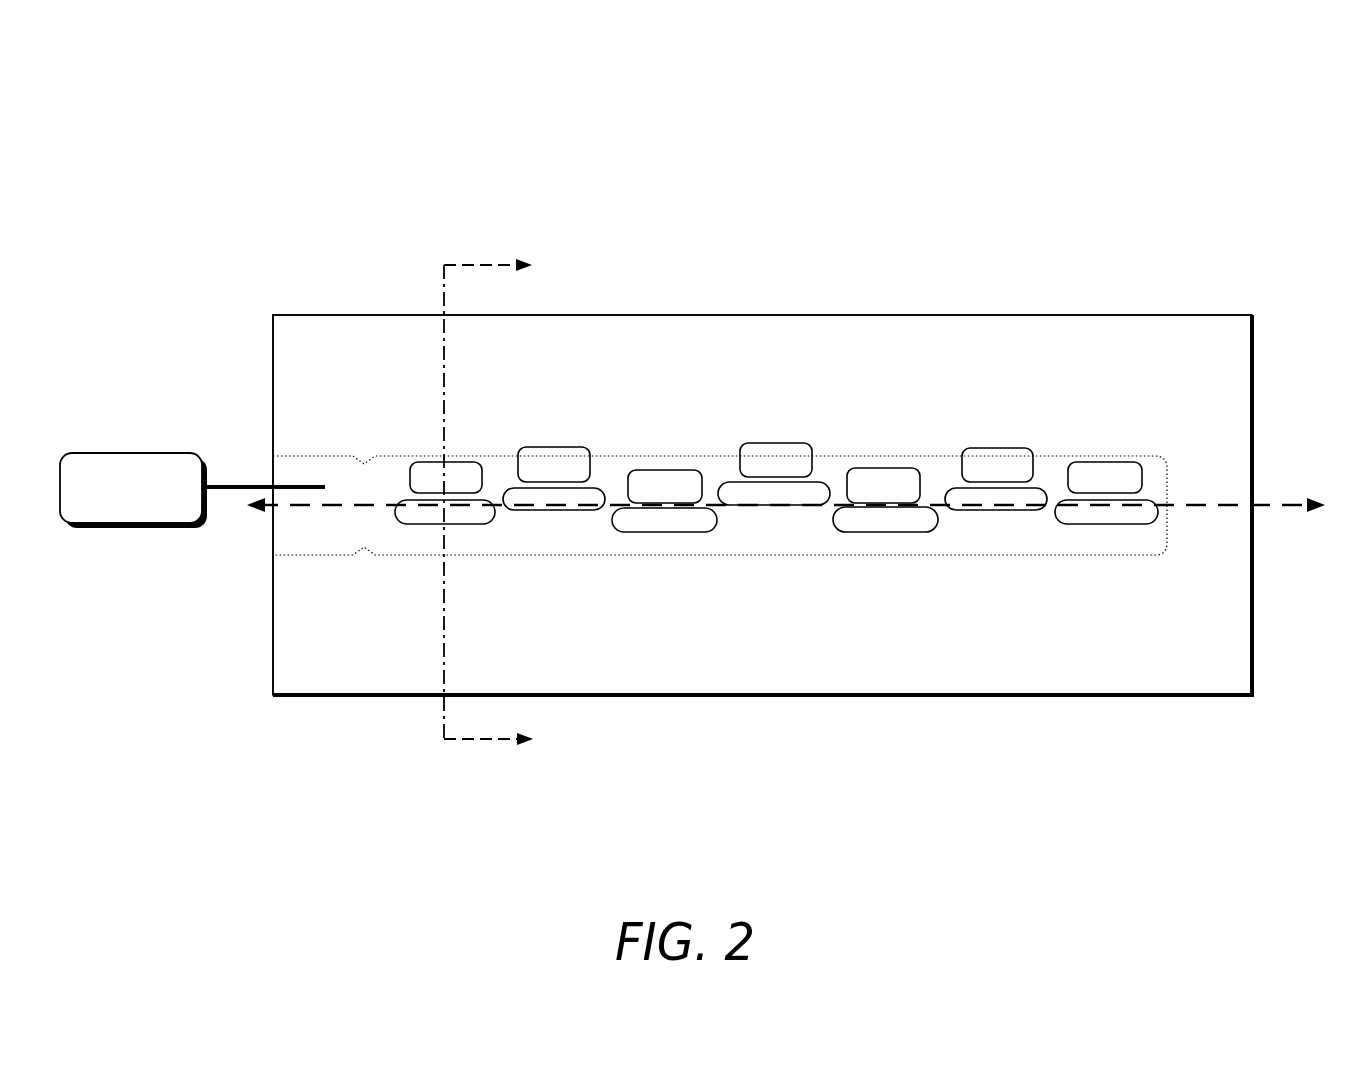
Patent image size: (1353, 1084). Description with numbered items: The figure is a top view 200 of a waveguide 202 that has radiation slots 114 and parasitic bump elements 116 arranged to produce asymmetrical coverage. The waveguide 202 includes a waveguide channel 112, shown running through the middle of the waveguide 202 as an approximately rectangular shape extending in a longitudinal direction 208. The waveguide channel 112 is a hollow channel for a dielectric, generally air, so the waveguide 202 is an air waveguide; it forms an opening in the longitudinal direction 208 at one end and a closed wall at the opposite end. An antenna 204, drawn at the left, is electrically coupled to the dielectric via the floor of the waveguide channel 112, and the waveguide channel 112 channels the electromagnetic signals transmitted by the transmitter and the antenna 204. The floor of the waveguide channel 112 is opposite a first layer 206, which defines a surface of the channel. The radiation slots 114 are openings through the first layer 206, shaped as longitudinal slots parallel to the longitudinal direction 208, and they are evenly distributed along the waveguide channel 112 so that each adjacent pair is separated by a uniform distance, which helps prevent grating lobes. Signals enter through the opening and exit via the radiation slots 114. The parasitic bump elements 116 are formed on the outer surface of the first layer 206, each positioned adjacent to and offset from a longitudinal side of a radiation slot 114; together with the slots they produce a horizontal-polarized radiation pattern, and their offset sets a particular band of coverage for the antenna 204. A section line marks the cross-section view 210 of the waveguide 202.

The top view 200 is at (121, 78).
The waveguide channel 112 is at (328, 455).
The radiation slots 114 is at (417, 512).
The parasitic bump elements 116 is at (798, 452).
The waveguide 202 is at (1187, 314).
The antenna 204 is at (192, 490).
The first layer 206 is at (351, 663).
The longitudinal direction 208 is at (1247, 505).
The cross-section view 210 is at (445, 412).